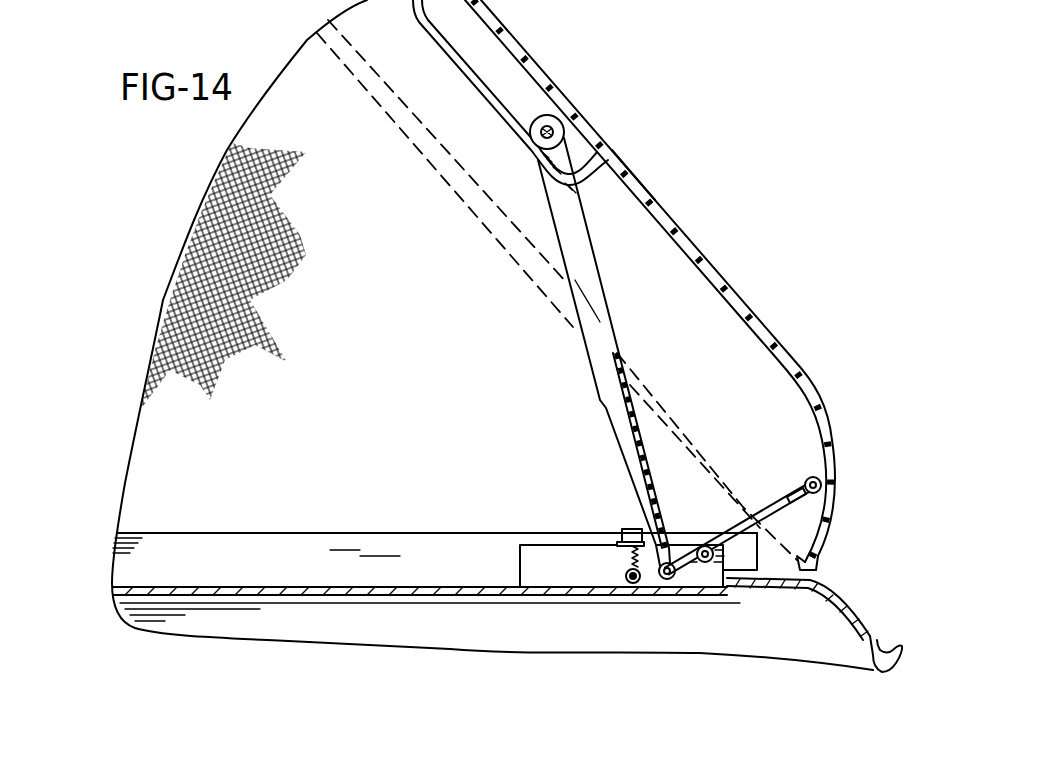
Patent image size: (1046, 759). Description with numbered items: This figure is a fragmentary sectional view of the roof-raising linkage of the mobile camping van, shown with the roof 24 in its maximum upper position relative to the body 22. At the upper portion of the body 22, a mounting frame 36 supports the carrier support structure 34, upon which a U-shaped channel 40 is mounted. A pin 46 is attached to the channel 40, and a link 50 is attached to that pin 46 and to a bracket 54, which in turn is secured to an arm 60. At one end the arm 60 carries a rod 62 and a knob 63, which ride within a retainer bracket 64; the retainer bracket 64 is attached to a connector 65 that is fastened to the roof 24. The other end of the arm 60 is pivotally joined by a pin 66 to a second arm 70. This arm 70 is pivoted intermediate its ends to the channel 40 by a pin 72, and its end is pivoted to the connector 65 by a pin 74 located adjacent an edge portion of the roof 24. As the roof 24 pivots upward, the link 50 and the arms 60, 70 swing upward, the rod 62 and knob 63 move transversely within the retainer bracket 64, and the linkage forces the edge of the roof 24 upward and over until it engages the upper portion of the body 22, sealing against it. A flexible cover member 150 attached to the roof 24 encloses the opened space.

The body 22 is at (893, 669).
The roof 24 is at (689, 233).
The carrier support structure 34 is at (294, 575).
The mounting frame 36 is at (836, 596).
The U-shaped channel 40 is at (519, 561).
The pin 46 is at (633, 584).
The link 50 is at (629, 560).
The bracket 54 is at (623, 531).
The arm 60 is at (585, 240).
The rod 62 is at (531, 136).
The knob 63 is at (541, 126).
The retainer bracket 64 is at (413, 22).
The connector 65 is at (640, 183).
The pin 66 is at (668, 580).
The arm 70 is at (762, 505).
The pin 72 is at (707, 546).
The pin 74 is at (822, 486).
The flexible cover member 150 is at (235, 146).